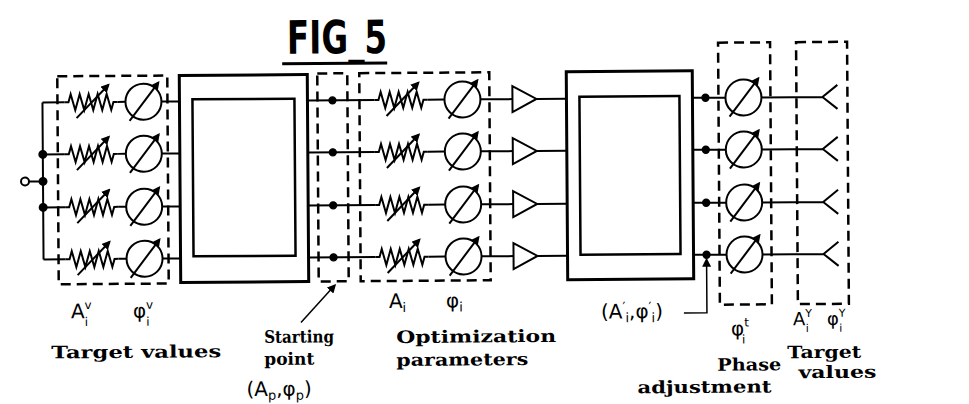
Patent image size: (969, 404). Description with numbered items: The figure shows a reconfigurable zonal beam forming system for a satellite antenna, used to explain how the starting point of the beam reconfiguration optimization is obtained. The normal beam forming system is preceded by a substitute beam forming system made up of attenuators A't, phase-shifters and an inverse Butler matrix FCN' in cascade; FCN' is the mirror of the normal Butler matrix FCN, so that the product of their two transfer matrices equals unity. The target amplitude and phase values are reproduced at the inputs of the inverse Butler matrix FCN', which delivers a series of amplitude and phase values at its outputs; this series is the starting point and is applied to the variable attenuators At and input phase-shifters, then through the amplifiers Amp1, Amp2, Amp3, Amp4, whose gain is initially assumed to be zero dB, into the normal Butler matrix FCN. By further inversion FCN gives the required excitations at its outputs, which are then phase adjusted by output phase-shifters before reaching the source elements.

The inverse Butler matrix FCN' is at (244, 149).
The Butler matrix FCN is at (630, 158).
The amplifier Amp1 is at (520, 87).
The amplifier Amp2 is at (524, 136).
The amplifier Amp3 is at (524, 189).
The amplifier Amp4 is at (524, 241).
The attenuators of the substitute beam forming system A't is at (113, 146).
The variable attenuators At is at (398, 77).